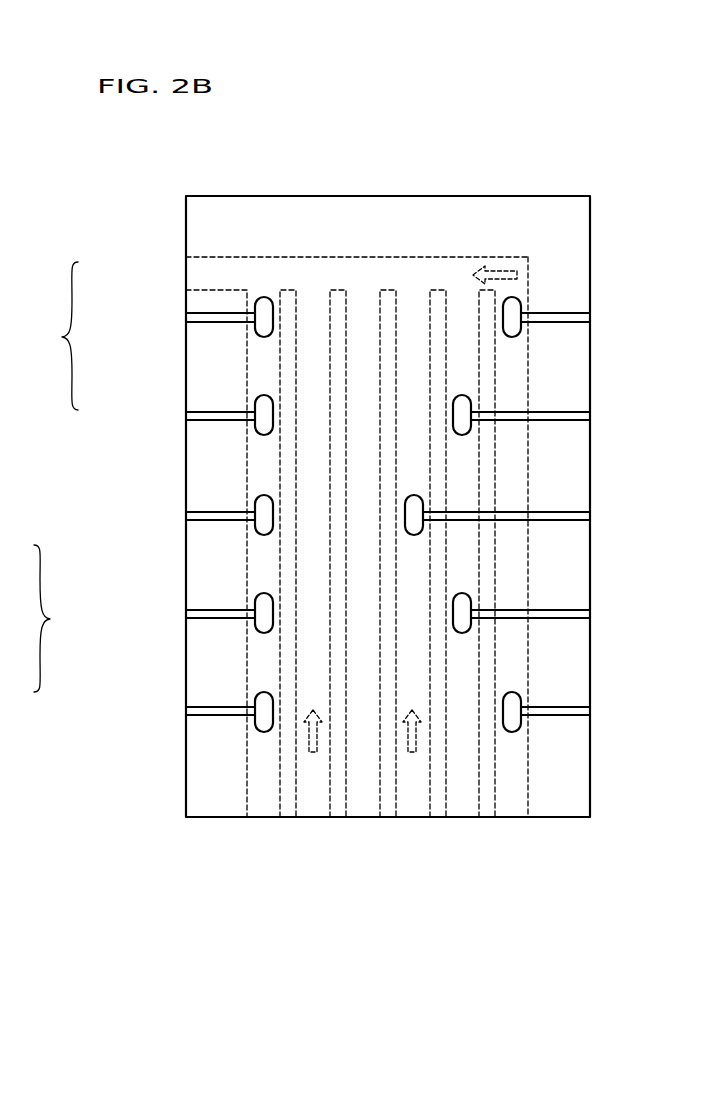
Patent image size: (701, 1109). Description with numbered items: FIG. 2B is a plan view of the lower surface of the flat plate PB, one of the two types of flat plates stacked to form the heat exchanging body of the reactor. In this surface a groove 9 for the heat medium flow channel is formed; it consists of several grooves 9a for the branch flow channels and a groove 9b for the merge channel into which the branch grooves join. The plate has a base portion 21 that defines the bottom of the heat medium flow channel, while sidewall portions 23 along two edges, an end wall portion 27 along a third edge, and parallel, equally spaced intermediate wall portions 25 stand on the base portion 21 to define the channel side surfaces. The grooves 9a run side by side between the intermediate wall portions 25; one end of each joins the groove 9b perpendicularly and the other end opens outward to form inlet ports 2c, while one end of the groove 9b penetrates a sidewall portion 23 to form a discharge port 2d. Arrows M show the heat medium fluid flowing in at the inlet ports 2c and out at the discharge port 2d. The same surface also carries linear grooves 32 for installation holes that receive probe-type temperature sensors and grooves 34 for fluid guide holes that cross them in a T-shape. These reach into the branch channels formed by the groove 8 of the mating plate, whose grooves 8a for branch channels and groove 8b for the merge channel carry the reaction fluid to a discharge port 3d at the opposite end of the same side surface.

The base portion 21 is at (562, 818).
The discharge port 2d is at (188, 257).
The groove for merge channel 9b is at (262, 292).
The groove for heat medium flow channel 9 is at (45, 336).
The grooves for branch flow channels 9a is at (410, 457).
The grooves for fluid guide holes 34 is at (267, 297).
The grooves for installation holes 32 is at (228, 322).
The intermediate wall portions 25 is at (346, 318).
The end wall portion 27 is at (472, 257).
The flat plate PB is at (544, 162).
The direction of flow of heat medium fluid M is at (496, 266).
The sidewall portions 23 is at (562, 357).
The groove for reaction flow channel 8 is at (66, 618).
The grooves for branch flow channels 8a is at (17, 575).
The groove for merge channel 8b is at (17, 663).
The discharge port 3d is at (0, 750).
The inlet ports 2c is at (510, 818).